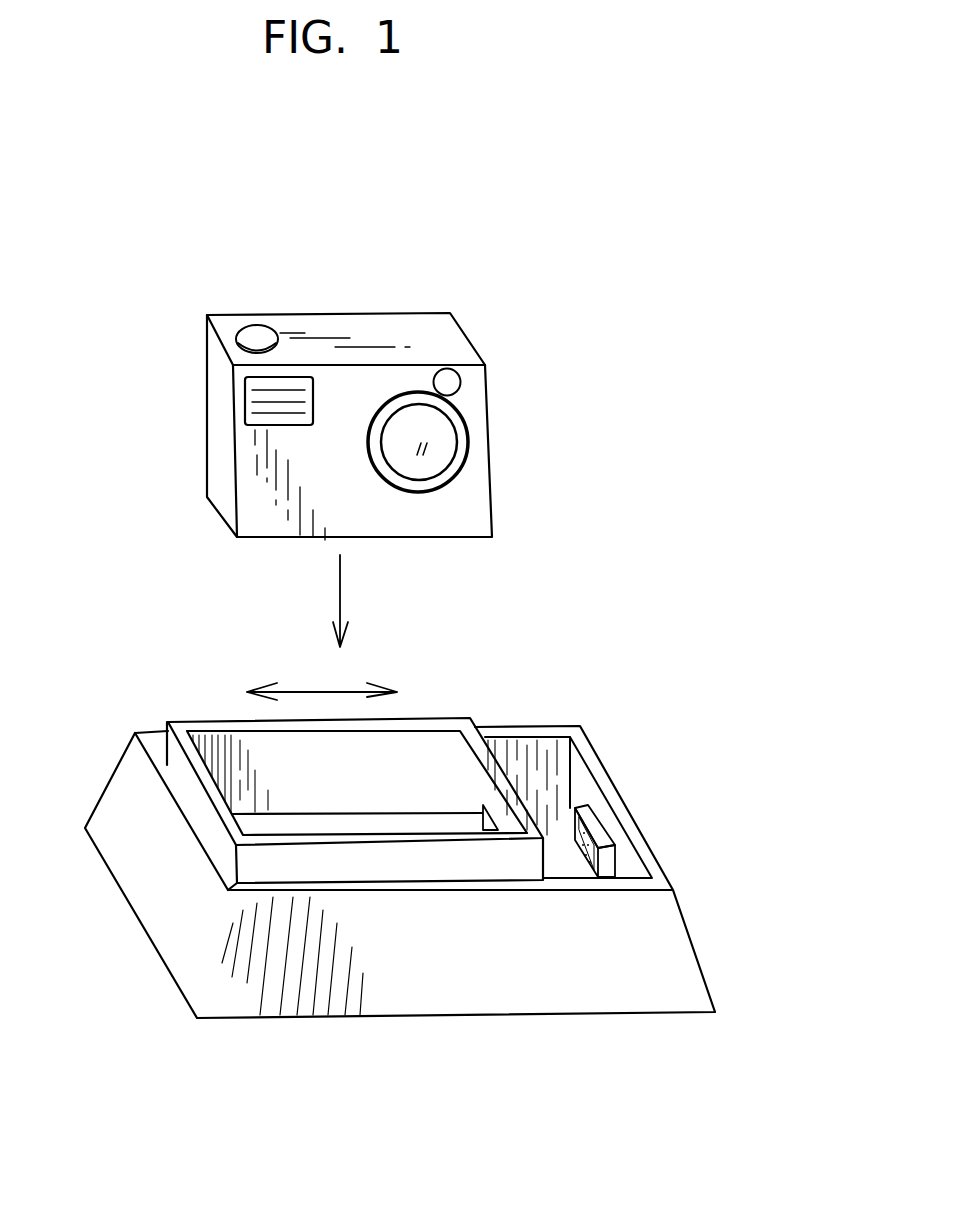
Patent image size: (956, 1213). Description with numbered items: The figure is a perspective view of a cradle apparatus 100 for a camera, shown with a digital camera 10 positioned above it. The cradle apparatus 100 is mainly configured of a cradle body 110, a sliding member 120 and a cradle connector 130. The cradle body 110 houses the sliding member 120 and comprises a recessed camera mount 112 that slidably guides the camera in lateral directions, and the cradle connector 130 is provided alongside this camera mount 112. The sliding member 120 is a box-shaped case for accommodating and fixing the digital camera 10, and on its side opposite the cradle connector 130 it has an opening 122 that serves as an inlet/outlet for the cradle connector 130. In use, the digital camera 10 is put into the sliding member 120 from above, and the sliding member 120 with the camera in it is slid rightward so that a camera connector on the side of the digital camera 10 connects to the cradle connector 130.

The digital camera 10 is at (473, 338).
The cradle apparatus 100 is at (662, 703).
The cradle body 110 is at (568, 717).
The camera mount 112 is at (546, 755).
The sliding member 120 is at (218, 722).
The opening 122 is at (468, 812).
The cradle connector 130 is at (598, 830).